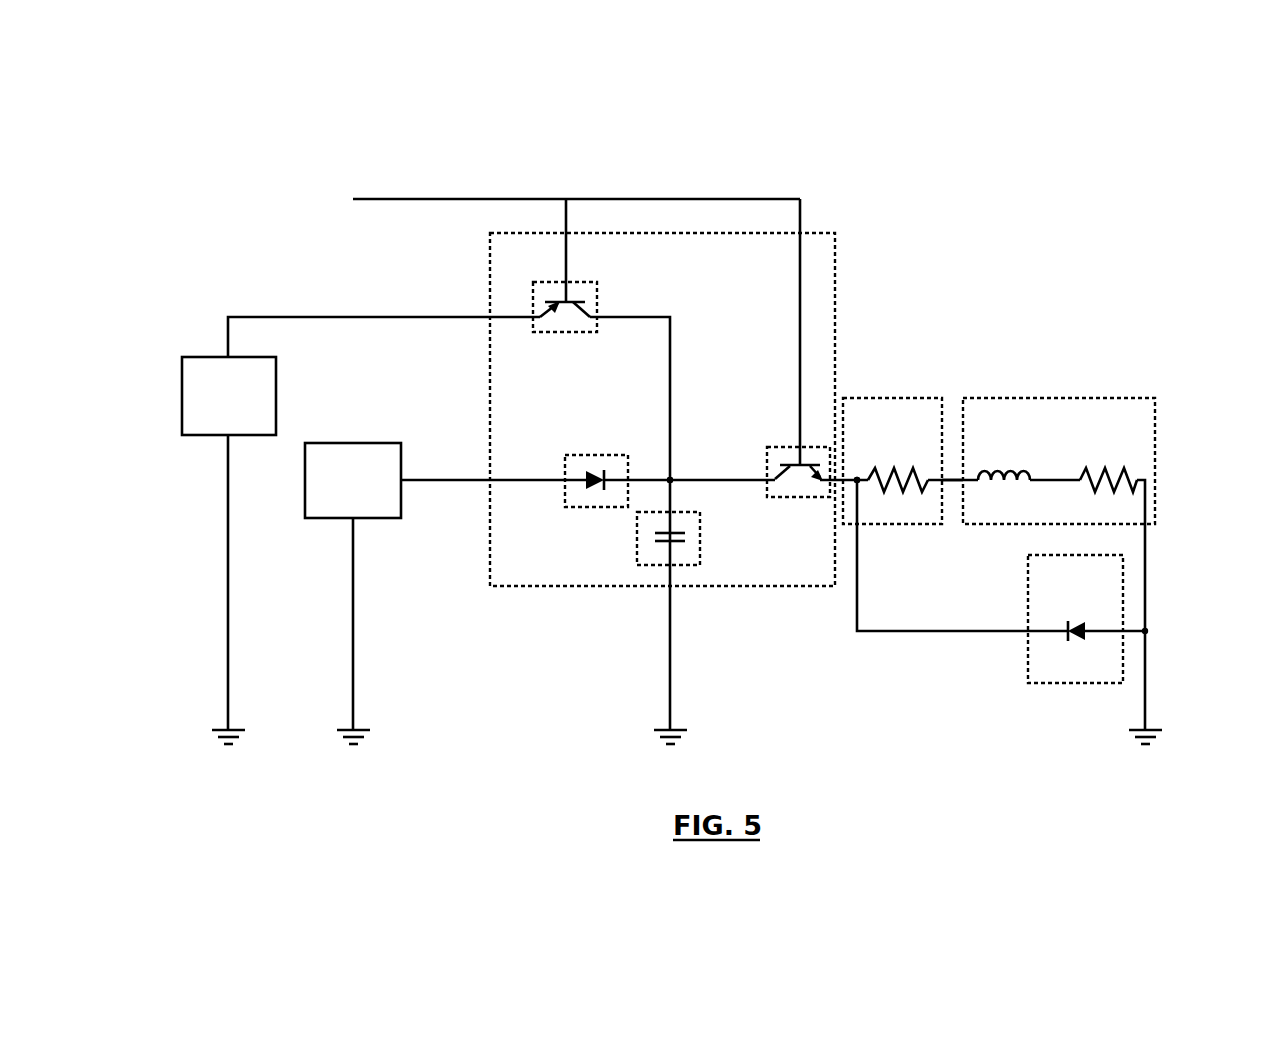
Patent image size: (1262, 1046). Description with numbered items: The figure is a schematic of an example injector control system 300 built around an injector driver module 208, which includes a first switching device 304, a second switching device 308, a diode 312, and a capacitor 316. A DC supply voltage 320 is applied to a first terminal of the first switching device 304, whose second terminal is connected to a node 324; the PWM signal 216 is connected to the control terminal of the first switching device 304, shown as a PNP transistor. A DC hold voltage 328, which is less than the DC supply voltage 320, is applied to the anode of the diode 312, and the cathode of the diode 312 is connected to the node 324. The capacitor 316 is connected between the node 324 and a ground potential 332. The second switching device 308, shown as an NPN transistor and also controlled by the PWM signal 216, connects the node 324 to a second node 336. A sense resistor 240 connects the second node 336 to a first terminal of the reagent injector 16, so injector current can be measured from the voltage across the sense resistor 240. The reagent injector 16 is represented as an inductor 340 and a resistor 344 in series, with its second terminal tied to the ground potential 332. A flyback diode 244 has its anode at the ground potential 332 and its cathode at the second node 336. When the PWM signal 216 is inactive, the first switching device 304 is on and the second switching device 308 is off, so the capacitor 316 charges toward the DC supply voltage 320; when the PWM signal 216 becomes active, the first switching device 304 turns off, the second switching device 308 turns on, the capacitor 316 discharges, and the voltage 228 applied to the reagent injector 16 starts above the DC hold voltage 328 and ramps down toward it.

The injector control system 300 is at (1195, 99).
The PWM signal 216 is at (384, 199).
The injector driver module 208 is at (812, 233).
The first switching device 304 is at (562, 333).
The second switching device 308 is at (767, 456).
The diode 312 is at (591, 455).
The capacitor 316 is at (637, 545).
The DC supply voltage 320 is at (250, 436).
The node 324 is at (669, 479).
The DC hold voltage 328 is at (385, 519).
The ground potential 332 is at (229, 720).
The sense resistor 240 is at (891, 398).
The reagent injector 16 is at (1058, 398).
The inductor 340 is at (985, 482).
The resistor 344 is at (1086, 471).
The voltage 228 is at (950, 482).
The second node 336 is at (858, 482).
The flyback diode 244 is at (1028, 582).